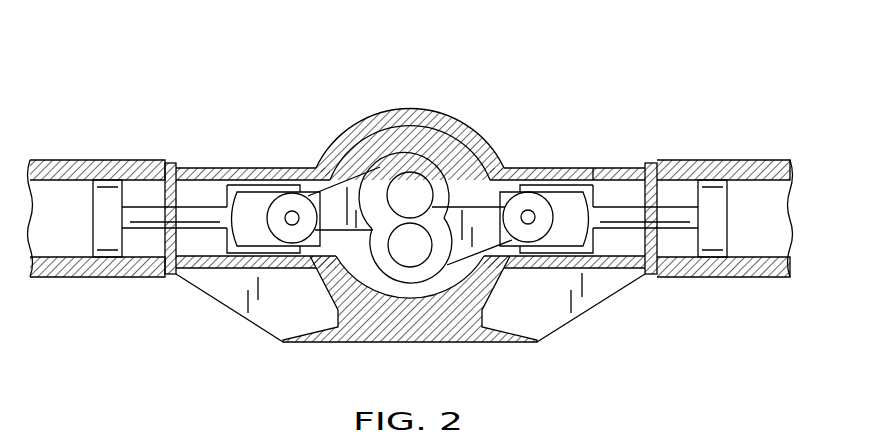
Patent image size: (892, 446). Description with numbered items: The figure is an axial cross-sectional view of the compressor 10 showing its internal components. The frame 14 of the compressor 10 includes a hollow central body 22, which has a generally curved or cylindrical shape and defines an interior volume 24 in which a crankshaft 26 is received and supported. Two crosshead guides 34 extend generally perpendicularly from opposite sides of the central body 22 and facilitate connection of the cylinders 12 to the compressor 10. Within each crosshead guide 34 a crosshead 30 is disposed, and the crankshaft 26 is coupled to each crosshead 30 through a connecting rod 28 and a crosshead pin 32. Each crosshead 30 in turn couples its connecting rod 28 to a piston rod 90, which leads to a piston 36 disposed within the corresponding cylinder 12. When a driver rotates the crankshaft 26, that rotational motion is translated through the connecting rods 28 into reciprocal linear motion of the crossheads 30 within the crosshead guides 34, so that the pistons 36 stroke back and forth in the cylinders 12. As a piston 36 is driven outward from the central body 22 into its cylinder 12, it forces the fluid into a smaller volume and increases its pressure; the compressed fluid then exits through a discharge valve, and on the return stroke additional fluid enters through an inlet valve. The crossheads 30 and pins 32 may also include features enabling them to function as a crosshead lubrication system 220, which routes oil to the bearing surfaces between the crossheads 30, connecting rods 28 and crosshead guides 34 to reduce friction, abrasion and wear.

The compressor 10 is at (410, 199).
The cylinder 12 is at (125, 160).
The frame 14 is at (457, 132).
The central body 22 is at (352, 124).
The interior volume 24 is at (408, 143).
The crankshaft 26 is at (410, 195).
The connecting rod 28 is at (473, 217).
The crosshead 30 is at (246, 182).
The crosshead pin 32 is at (290, 216).
The crosshead guide 34 is at (193, 264).
The piston 36 is at (105, 213).
The piston rod 90 is at (193, 215).
The crosshead lubrication system 220 is at (247, 138).